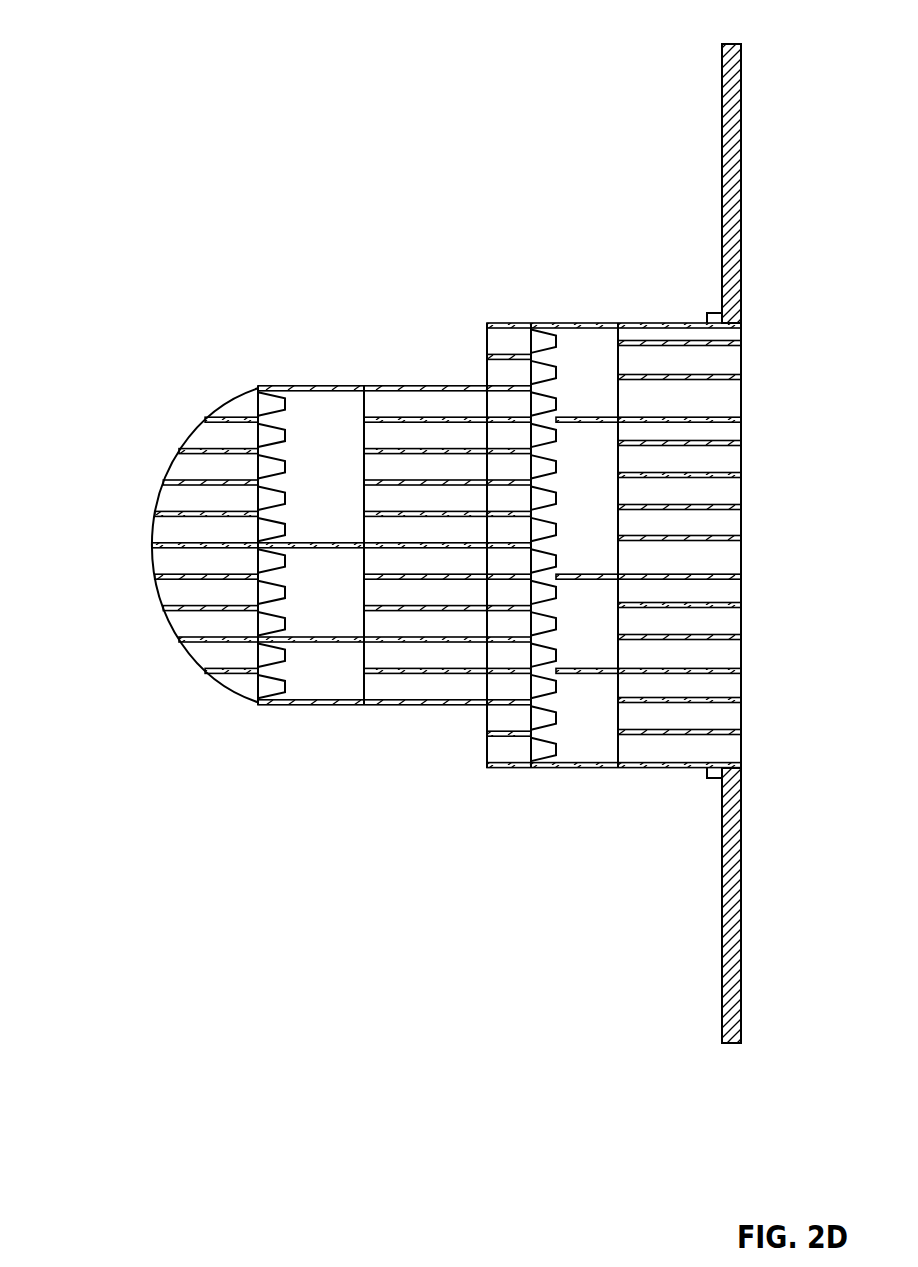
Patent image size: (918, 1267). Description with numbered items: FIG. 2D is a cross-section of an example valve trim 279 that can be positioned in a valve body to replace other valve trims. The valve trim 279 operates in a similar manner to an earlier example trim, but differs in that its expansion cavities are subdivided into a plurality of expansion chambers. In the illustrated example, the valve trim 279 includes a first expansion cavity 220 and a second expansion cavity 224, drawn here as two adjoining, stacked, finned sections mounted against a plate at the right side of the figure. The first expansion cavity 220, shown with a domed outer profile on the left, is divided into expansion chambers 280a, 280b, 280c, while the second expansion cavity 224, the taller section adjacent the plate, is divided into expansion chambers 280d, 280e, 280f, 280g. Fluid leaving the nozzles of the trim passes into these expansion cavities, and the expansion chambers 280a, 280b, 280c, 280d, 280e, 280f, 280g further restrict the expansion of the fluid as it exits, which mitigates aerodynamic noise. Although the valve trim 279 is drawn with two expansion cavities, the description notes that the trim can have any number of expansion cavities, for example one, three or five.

The valve trim 279 is at (113, 46).
The first expansion cavity 220 is at (309, 358).
The second expansion cavity 224 is at (581, 306).
The expansion chamber 280a is at (324, 466).
The expansion chamber 280b is at (324, 592).
The expansion chamber 280c is at (324, 671).
The expansion chamber 280d is at (587, 373).
The expansion chamber 280e is at (587, 498).
The expansion chamber 280f is at (587, 624).
The expansion chamber 280g is at (587, 718).